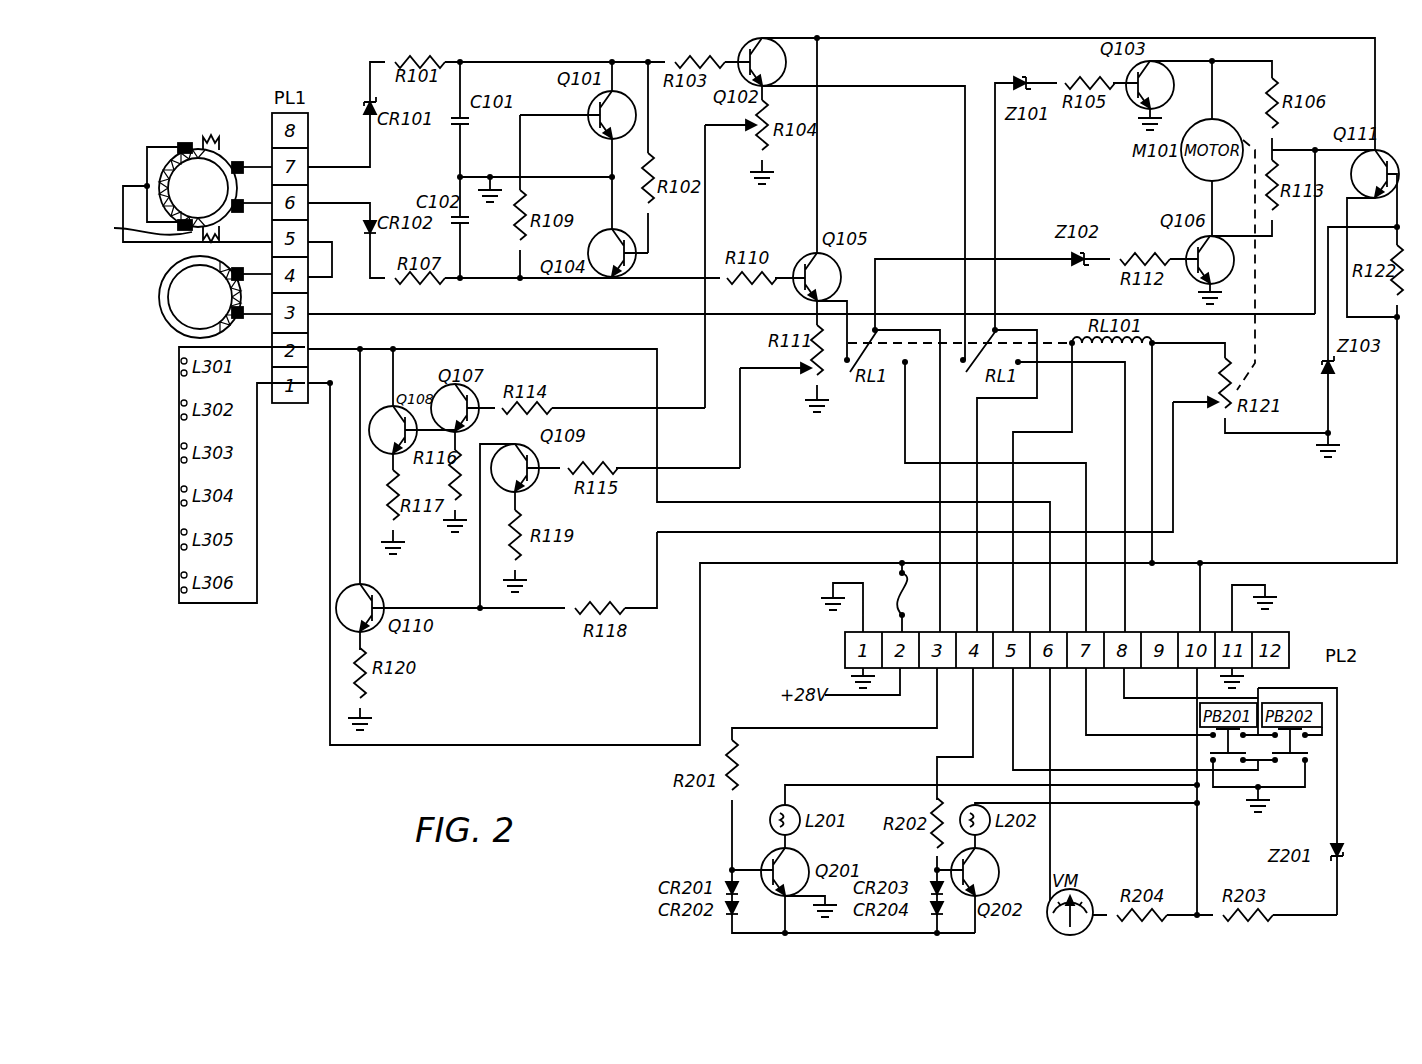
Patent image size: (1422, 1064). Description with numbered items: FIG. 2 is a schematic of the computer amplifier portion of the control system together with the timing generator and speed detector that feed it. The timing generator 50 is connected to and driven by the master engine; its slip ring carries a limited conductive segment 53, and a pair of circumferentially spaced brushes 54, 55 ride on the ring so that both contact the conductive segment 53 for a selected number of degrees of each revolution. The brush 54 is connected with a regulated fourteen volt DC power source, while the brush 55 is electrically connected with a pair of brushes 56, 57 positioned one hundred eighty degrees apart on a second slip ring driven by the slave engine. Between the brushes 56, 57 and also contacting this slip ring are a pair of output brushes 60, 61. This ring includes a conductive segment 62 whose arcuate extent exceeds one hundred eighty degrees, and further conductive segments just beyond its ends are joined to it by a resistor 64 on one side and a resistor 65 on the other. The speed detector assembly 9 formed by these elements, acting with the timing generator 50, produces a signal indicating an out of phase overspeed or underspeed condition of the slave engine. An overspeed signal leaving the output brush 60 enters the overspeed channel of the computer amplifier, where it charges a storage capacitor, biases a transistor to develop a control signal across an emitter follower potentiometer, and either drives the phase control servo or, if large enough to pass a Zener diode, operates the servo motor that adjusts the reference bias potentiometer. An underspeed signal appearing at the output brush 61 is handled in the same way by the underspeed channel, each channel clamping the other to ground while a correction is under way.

The generator assembly 9 is at (145, 165).
The timing generator 50 is at (168, 326).
The conductive segment 53 is at (228, 296).
The brush 54 is at (239, 318).
The brush 55 is at (239, 268).
The brush 56 is at (182, 143).
The brush 57 is at (140, 228).
The output brush 60 is at (239, 162).
The output brush 61 is at (239, 212).
The conductive segment 62 is at (172, 180).
The resistor 64 is at (212, 138).
The resistor 65 is at (210, 238).